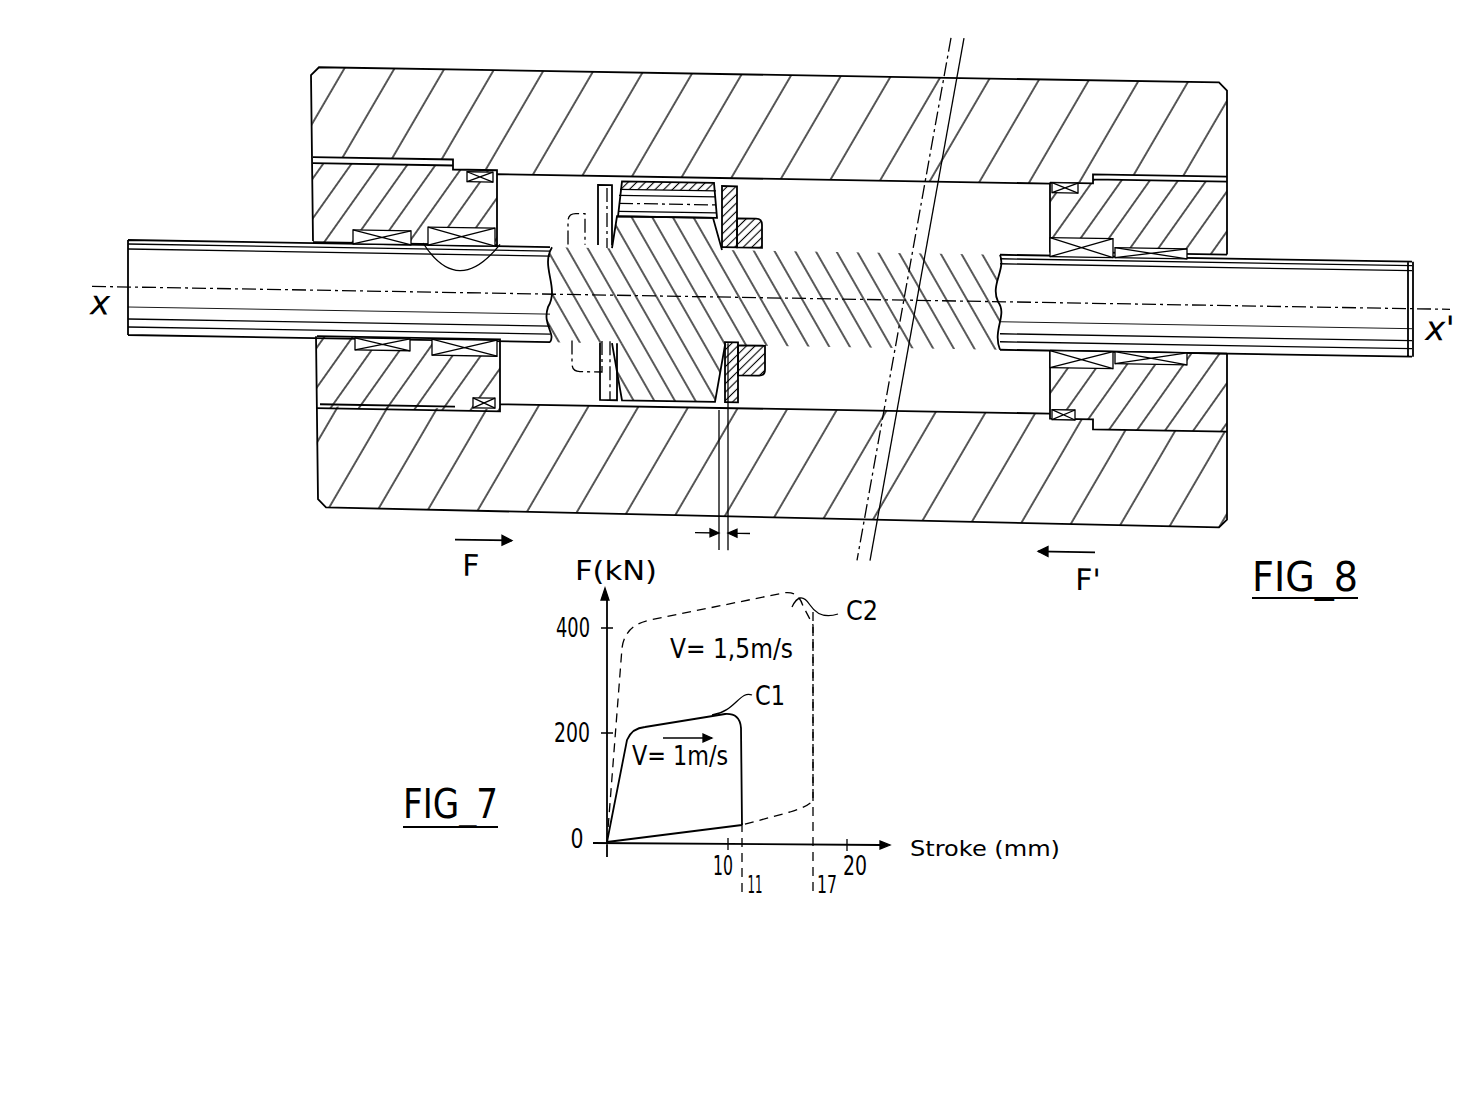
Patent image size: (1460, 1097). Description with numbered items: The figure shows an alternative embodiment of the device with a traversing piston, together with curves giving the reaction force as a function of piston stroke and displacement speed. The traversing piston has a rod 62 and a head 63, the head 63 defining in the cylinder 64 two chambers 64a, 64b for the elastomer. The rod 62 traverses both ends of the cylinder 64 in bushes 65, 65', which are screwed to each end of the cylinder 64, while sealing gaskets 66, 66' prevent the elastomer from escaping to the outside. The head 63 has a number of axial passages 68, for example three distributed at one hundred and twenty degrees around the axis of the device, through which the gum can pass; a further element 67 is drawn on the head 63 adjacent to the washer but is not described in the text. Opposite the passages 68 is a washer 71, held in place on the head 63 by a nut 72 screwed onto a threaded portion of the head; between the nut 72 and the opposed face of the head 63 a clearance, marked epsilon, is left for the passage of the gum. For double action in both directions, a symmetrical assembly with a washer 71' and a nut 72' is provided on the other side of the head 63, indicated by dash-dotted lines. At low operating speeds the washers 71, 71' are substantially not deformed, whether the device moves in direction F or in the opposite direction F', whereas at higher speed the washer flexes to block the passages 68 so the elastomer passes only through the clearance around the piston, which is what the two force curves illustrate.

The rod 62 is at (275, 316).
The head 63 is at (660, 375).
The cylinder 64 is at (512, 101).
The chamber 64a is at (832, 375).
The chamber 64b is at (545, 380).
The bush 65 is at (375, 282).
The bush 65' is at (1176, 303).
The sealing gasket 66 is at (513, 289).
The sealing gasket 66' is at (1038, 269).
The piston ring 67 is at (712, 400).
The axial passage 68 is at (665, 170).
The washer 71 is at (773, 278).
The washer 71' is at (569, 321).
The nut 72 is at (826, 215).
The nut 72' is at (581, 196).